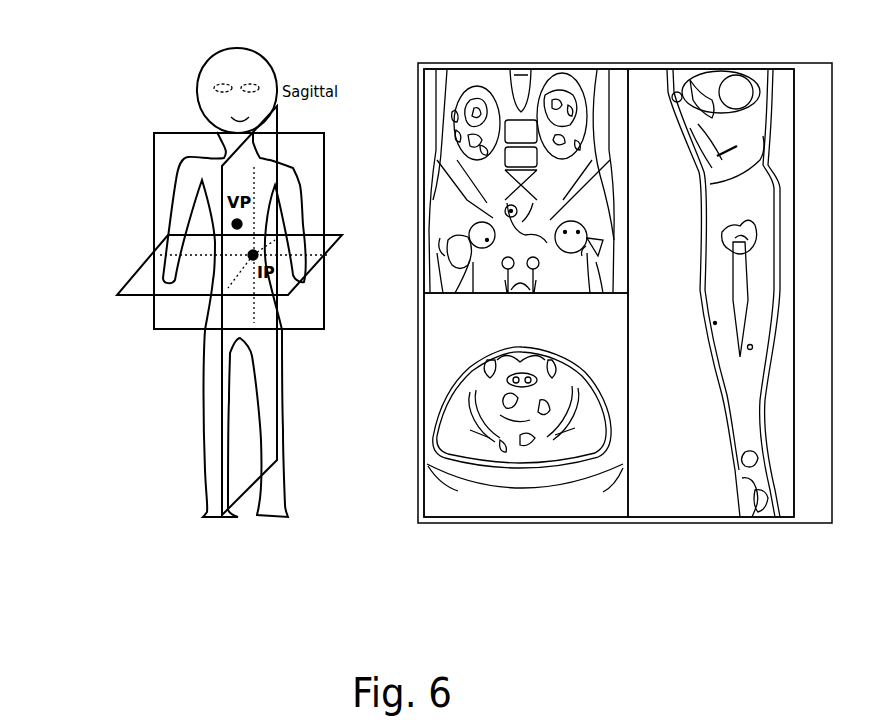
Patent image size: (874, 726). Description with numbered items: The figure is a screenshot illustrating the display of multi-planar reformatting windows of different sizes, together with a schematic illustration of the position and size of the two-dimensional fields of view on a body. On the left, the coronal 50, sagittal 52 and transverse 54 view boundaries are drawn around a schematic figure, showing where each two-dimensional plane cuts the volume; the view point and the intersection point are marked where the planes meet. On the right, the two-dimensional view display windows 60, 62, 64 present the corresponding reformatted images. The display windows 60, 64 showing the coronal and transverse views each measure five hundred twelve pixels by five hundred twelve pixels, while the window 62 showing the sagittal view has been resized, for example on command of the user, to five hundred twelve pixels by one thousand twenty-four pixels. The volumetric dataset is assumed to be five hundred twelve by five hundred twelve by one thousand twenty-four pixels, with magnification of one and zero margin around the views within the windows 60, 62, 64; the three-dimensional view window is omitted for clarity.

The coronal MPR plane 50 is at (325, 150).
The sagittal MPR plane 52 is at (218, 428).
The transverse MPR plane 54 is at (135, 290).
The two-dimensional view display window 60 is at (470, 67).
The two-dimensional view display window 62 is at (750, 66).
The two-dimensional view display window 64 is at (510, 520).